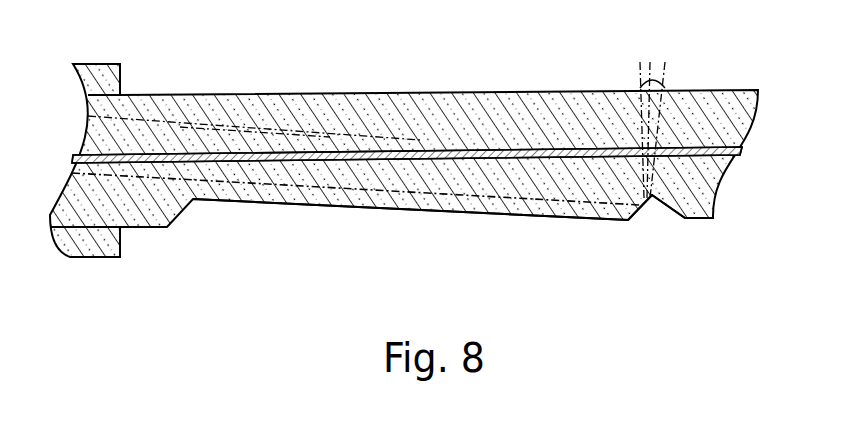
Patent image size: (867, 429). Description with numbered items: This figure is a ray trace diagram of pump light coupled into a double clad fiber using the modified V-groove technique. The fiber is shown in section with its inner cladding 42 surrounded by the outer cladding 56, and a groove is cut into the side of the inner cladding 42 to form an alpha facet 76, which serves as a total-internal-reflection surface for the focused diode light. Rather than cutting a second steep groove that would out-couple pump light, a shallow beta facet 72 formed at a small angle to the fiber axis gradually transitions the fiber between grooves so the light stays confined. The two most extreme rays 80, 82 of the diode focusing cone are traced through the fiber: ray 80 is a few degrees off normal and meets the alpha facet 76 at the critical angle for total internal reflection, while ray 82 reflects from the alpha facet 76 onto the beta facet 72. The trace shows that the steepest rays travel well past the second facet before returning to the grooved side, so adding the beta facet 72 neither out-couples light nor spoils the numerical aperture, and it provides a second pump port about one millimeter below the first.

The inner cladding 42 is at (430, 92).
The outer cladding 56 is at (97, 251).
The beta facet 72 is at (395, 208).
The alpha facet 76 is at (638, 205).
The ray 80 is at (255, 198).
The ray 82 is at (298, 103).